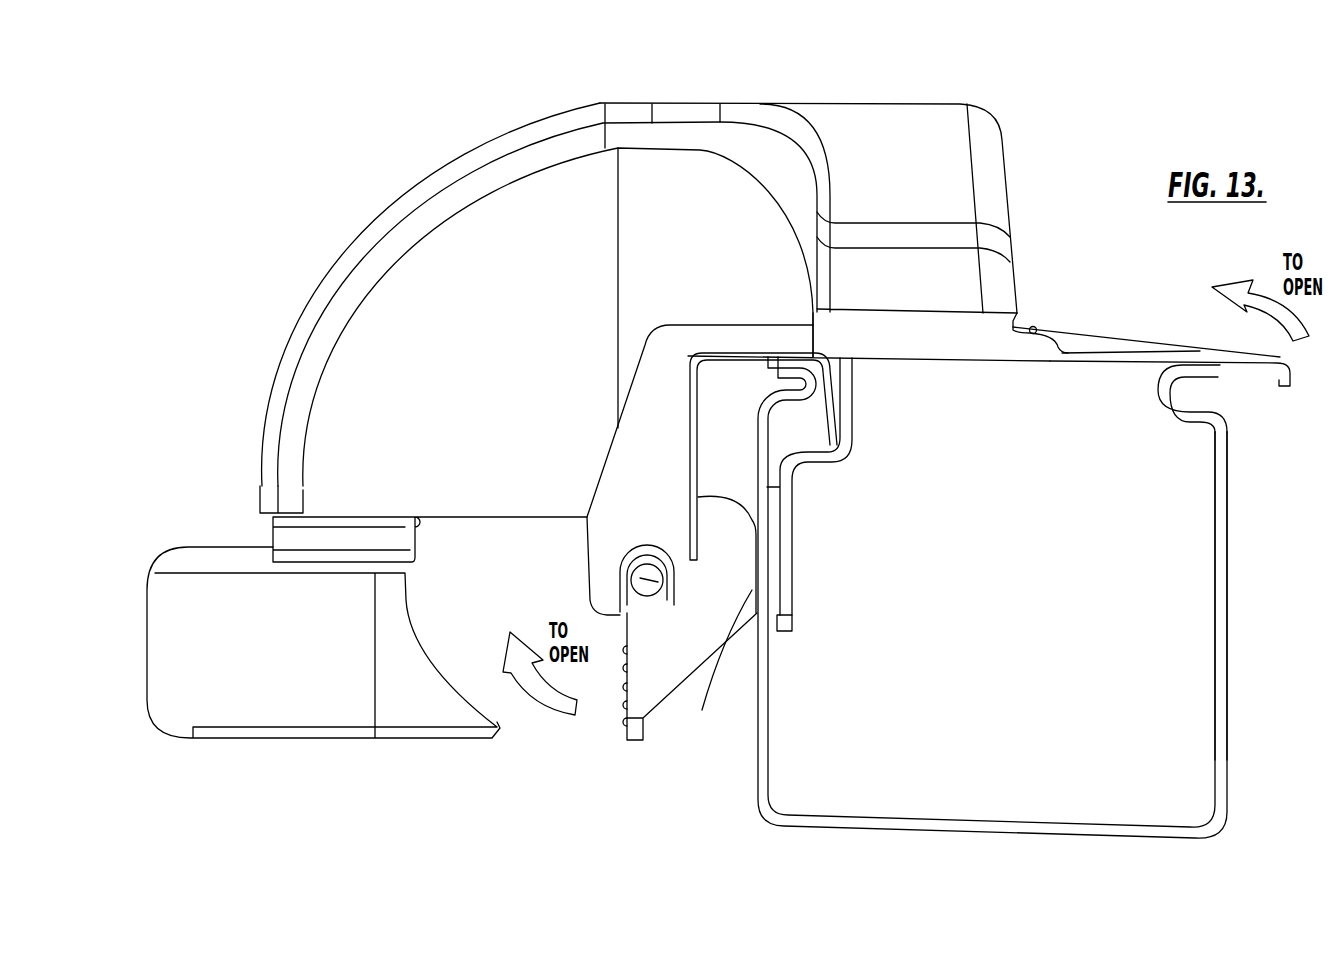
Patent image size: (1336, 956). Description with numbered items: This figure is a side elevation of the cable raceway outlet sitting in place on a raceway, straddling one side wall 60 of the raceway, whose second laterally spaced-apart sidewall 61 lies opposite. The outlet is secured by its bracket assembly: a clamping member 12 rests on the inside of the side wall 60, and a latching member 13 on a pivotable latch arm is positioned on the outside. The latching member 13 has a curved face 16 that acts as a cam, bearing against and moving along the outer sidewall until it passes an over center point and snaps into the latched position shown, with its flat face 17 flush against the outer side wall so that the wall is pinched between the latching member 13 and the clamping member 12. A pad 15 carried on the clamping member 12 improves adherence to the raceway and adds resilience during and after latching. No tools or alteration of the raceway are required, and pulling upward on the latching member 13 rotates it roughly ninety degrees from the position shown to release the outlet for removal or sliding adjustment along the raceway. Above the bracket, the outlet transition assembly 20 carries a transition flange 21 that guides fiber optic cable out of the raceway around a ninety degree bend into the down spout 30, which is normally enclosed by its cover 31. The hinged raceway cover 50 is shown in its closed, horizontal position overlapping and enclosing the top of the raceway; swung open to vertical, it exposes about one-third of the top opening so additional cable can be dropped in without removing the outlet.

The clamping member 12 is at (790, 596).
The latching member 13 is at (637, 698).
The pad 15 is at (771, 613).
The curved face 16 is at (728, 507).
The flat face 17 is at (702, 711).
The outlet transition assembly 20 is at (1076, 162).
The transition flange 21 is at (897, 153).
The down spout 30 is at (326, 276).
The cover 31 is at (440, 173).
The hinged raceway cover 50 is at (1181, 362).
The side wall 60 is at (757, 737).
The second sidewall 61 is at (1220, 763).